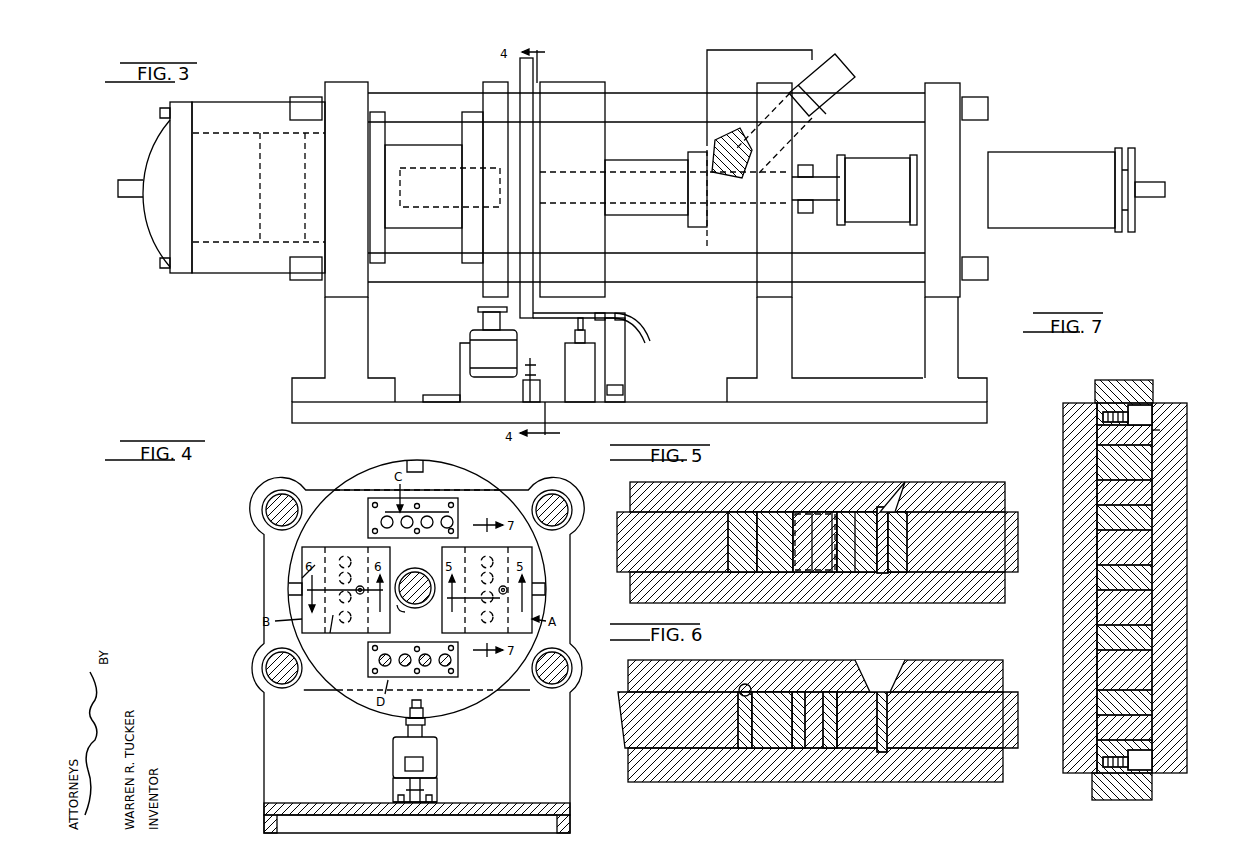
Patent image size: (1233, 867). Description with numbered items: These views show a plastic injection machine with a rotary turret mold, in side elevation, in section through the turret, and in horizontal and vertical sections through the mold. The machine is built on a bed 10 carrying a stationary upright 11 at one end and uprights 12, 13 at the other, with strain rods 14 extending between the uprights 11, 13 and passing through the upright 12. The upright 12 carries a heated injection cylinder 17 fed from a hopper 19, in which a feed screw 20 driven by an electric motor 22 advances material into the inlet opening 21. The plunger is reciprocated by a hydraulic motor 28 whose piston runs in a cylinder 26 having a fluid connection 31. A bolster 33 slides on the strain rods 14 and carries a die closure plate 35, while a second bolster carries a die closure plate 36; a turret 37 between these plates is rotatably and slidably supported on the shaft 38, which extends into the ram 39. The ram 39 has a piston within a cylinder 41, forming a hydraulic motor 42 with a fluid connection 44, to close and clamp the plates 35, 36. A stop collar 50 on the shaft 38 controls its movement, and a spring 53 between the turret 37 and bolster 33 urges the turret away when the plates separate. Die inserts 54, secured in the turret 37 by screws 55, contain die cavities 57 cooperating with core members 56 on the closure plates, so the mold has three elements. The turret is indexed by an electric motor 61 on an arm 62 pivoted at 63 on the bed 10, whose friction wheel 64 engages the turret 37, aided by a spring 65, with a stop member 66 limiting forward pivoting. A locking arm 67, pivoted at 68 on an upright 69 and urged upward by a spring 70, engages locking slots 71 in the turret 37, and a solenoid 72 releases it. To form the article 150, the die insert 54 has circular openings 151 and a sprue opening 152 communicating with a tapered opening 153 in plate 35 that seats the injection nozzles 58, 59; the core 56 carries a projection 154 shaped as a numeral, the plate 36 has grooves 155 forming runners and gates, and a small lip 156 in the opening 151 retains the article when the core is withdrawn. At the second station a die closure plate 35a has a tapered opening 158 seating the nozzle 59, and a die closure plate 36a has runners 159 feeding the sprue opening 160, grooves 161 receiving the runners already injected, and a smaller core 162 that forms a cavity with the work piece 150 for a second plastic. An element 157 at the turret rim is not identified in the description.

In FIG. 3, the bed 10 is at (988, 413).
In FIG. 4, the bed 10 is at (264, 812).
In FIG. 3, the upright 11 is at (340, 90).
In FIG. 4, the upright 11 is at (264, 735).
In FIG. 3, the upright 12 is at (757, 316).
In FIG. 3, the upright 13 is at (940, 88).
In FIG. 3, the strain rods 14 is at (678, 95).
In FIG. 4, the strain rods 14 is at (288, 500).
In FIG. 3, the injection cylinder 17 is at (644, 194).
In FIG. 3, the hopper 19 is at (707, 52).
In FIG. 3, the feed screw 20 is at (708, 144).
In FIG. 3, the inlet opening 21 is at (688, 158).
In FIG. 3, the electric motor 22 is at (852, 79).
In FIG. 3, the cylinder 26 is at (1025, 230).
In FIG. 3, the hydraulic motor 28 is at (1124, 233).
In FIG. 3, the fluid connection 31 is at (1150, 197).
In FIG. 3, the bolster 33 is at (585, 85).
In FIG. 5, the die closure plate 35 is at (755, 485).
In FIG. 7, the die closure plate 35 is at (1185, 485).
In FIG. 6, the die closure plate 35a is at (972, 670).
In FIG. 5, the die closure plate 36 is at (745, 573).
In FIG. 7, the die closure plate 36 is at (1070, 585).
In FIG. 4, the die closure plate 36a is at (334, 634).
In FIG. 6, the die closure plate 36a is at (950, 781).
In FIG. 3, the turret 37 is at (534, 305).
In FIG. 4, the turret 37 is at (475, 698).
In FIG. 5, the turret 37 is at (1018, 520).
In FIG. 6, the turret 37 is at (1005, 750).
In FIG. 7, the turret 37 is at (1133, 385).
In FIG. 3, the shaft 38 is at (838, 172).
In FIG. 4, the shaft 38 is at (416, 575).
In FIG. 3, the ram 39 is at (428, 230).
In FIG. 3, the cylinder 41 is at (230, 273).
In FIG. 3, the hydraulic motor 42 is at (157, 215).
In FIG. 3, the fluid connection 44 is at (128, 197).
In FIG. 3, the stop collar 50 is at (805, 165).
In FIG. 4, the spring 53 is at (408, 616).
In FIG. 4, the die inserts 54 is at (368, 518).
In FIG. 5, the die inserts 54 is at (900, 510).
In FIG. 6, the die inserts 54 is at (905, 690).
In FIG. 7, the die inserts 54 is at (1152, 431).
In FIG. 4, the bolts or screws 55 is at (452, 505).
In FIG. 7, the bolts or screws 55 is at (1150, 410).
In FIG. 5, the core members 56 is at (812, 520).
In FIG. 7, the core members 56 is at (1105, 462).
In FIG. 5, the die cavities 57 is at (857, 512).
In FIG. 4, the injection nozzle 58 is at (507, 594).
In FIG. 4, the injection nozzle 59 is at (363, 595).
In FIG. 3, the electric motor 61 is at (470, 350).
In FIG. 4, the electric motor 61 is at (437, 755).
In FIG. 3, the arm 62 is at (460, 345).
In FIG. 4, the arm 62 is at (437, 785).
In FIG. 3, the pivot 63 is at (460, 400).
In FIG. 4, the pivot 63 is at (393, 800).
In FIG. 3, the friction wheel 64 is at (478, 310).
In FIG. 4, the friction wheel 64 is at (405, 722).
In FIG. 3, the spring 65 is at (523, 393).
In FIG. 3, the stop member 66 is at (532, 365).
In FIG. 4, the stop member 66 is at (406, 788).
In FIG. 3, the locking arm 67 is at (605, 315).
In FIG. 4, the locking arm 67 is at (424, 712).
In FIG. 3, the pivot 68 is at (625, 315).
In FIG. 3, the upright 69 is at (625, 374).
In FIG. 3, the spring 70 is at (641, 342).
In FIG. 4, the locking slots 71 is at (415, 460).
In FIG. 3, the electric solenoid 72 is at (580, 402).
In FIG. 6, the article 150 is at (775, 690).
In FIG. 5, the circular openings 151 is at (790, 556).
In FIG. 5, the sprue opening 152 is at (897, 574).
In FIG. 5, the tapered opening 153 is at (882, 512).
In FIG. 5, the projection 154 is at (832, 512).
In FIG. 5, the grooves 155 is at (855, 573).
In FIG. 5, the lip 156 is at (805, 574).
In FIG. 6, the lip 156 is at (832, 752).
In FIG. 7, the lip 156 is at (1097, 473).
In FIG. 4, the notch 157 is at (288, 590).
In FIG. 6, the tapered opening 158 is at (880, 690).
In FIG. 4, the runners 159 is at (382, 558).
In FIG. 6, the runners 159 is at (840, 750).
In FIG. 5, the sprue opening 160 is at (745, 520).
In FIG. 6, the sprue opening 160 is at (882, 752).
In FIG. 4, the grooves 161 is at (300, 578).
In FIG. 6, the grooves 161 is at (752, 750).
In FIG. 6, the core 162 is at (805, 750).